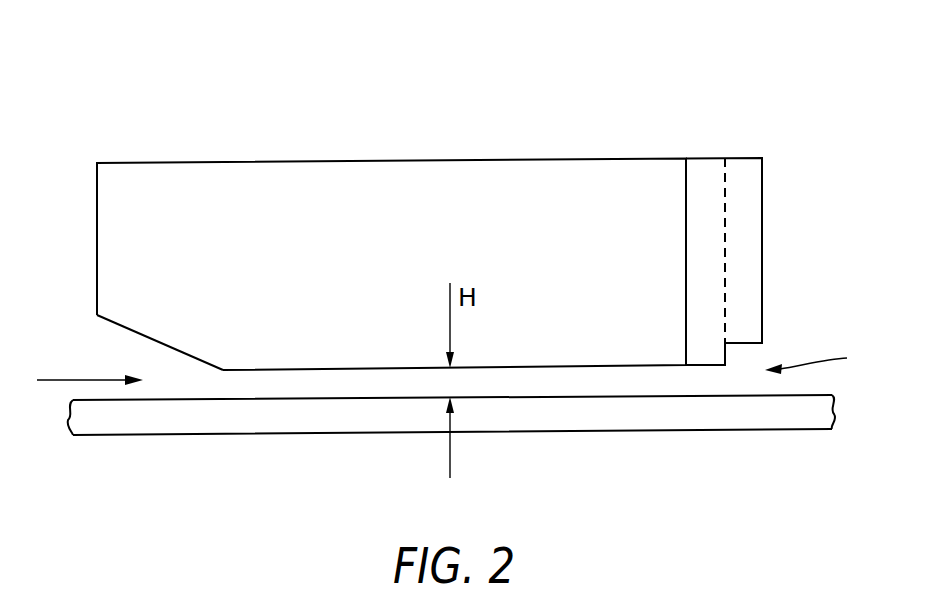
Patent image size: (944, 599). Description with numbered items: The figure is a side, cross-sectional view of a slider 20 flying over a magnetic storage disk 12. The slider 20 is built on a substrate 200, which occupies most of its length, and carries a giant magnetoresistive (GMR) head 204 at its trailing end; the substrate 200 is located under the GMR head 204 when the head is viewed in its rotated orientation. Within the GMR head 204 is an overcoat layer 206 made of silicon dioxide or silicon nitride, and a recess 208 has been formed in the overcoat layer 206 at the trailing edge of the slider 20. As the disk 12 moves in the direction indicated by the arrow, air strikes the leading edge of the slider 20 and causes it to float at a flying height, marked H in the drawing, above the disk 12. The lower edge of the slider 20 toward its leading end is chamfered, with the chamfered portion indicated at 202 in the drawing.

The slider 20 is at (603, 97).
The substrate 200 is at (178, 226).
The chamfered leading edge 202 is at (177, 348).
The GMR head 204 is at (762, 198).
The overcoat layer 206 is at (755, 297).
The recess 208 is at (824, 362).
The magnetic storage disk 12 is at (705, 430).